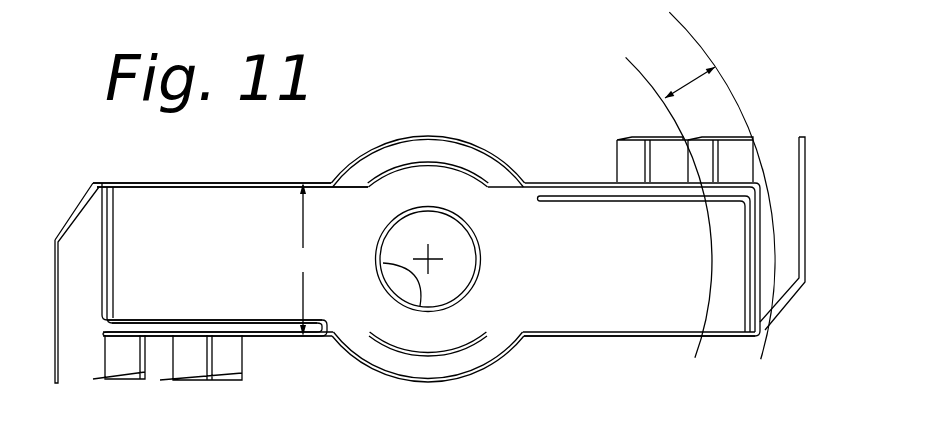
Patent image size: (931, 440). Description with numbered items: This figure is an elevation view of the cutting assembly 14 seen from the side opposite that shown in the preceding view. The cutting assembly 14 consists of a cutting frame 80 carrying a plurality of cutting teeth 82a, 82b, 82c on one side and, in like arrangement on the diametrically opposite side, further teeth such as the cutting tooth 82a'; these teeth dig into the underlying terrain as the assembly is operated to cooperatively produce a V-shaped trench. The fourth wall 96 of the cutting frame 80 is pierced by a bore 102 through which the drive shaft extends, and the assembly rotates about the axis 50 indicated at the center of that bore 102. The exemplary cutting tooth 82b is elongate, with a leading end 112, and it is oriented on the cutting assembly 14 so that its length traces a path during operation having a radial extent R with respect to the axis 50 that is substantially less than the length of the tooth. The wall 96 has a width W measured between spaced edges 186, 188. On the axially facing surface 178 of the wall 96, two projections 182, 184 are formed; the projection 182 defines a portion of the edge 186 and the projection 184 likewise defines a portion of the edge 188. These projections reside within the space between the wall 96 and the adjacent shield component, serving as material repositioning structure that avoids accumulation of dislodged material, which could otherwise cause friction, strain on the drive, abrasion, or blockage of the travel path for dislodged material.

The cutting assembly 14 is at (514, 144).
The axis 50 is at (430, 260).
The cutting frame 80 is at (268, 247).
The cutting tooth 82a is at (790, 207).
The cutting tooth 82a' is at (148, 305).
The cutting tooth 82b is at (727, 163).
The cutting tooth 82c is at (633, 162).
The fourth wall 96 is at (337, 253).
The bore 102 is at (425, 282).
The leading end 112 is at (723, 135).
The axially facing surface 178 is at (609, 302).
The projection 182 is at (156, 318).
The projection 184 is at (619, 203).
The edge 186 is at (257, 338).
The edge 188 is at (287, 183).
The radial extent R is at (695, 80).
The width W is at (303, 259).